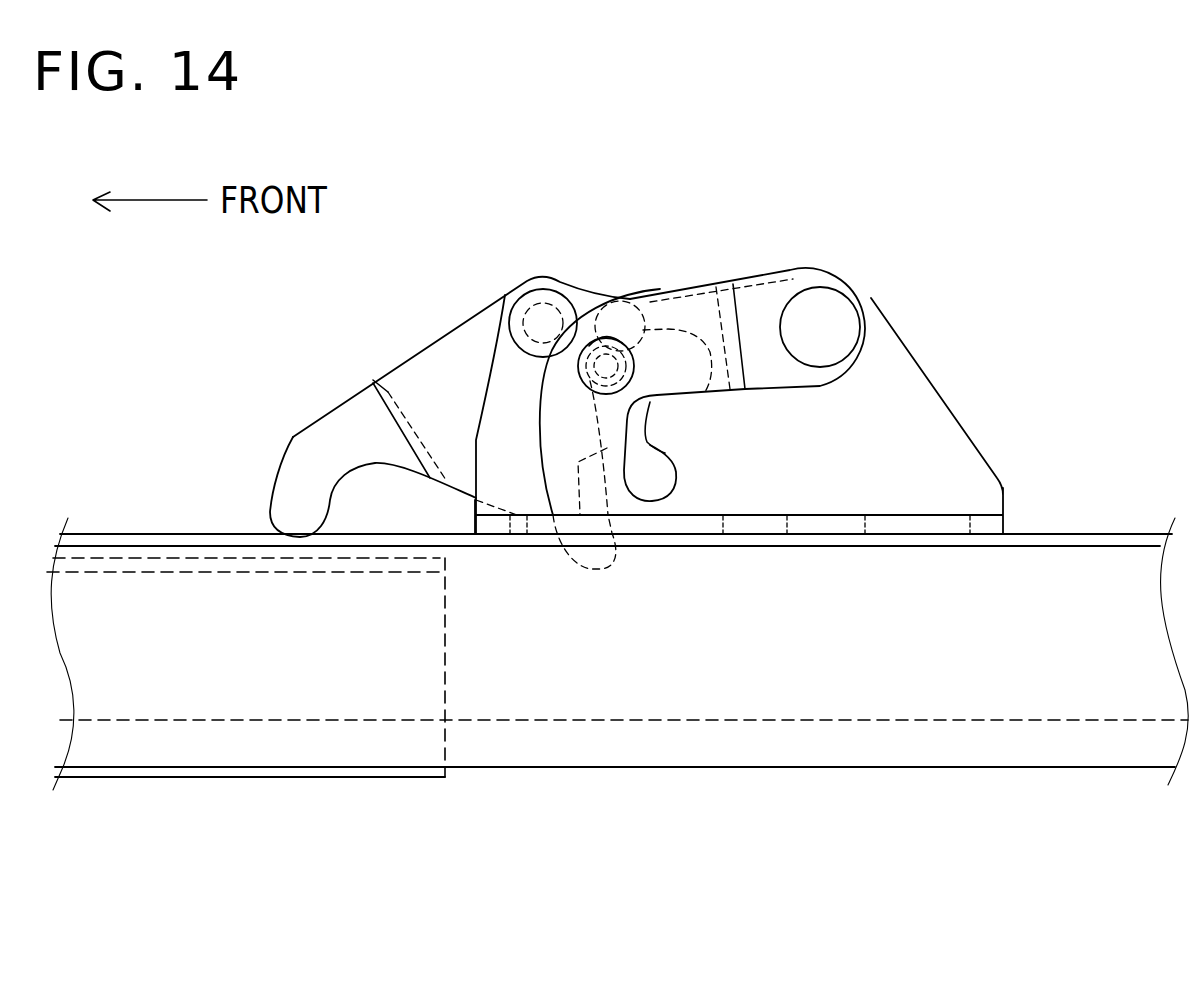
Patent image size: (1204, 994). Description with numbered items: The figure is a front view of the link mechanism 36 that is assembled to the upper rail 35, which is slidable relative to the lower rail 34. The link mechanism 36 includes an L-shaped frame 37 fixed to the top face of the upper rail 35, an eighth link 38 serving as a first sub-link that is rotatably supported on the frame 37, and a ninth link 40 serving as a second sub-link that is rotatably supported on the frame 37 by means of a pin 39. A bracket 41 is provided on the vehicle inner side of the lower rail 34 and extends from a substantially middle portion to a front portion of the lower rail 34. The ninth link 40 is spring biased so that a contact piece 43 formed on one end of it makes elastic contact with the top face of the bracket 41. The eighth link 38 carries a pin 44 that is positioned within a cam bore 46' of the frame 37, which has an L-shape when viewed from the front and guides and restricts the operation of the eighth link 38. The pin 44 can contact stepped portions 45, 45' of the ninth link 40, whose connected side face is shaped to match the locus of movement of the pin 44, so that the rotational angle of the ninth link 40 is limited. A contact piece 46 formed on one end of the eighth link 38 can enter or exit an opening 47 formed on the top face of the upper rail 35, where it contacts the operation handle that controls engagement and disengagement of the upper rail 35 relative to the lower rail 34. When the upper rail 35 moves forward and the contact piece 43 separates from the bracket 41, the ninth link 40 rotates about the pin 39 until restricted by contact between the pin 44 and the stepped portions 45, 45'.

The lower rail 34 is at (780, 750).
The upper rail 35 is at (1113, 533).
The link mechanism 36 is at (702, 394).
The L-shaped frame 37 is at (955, 413).
The eighth link 38 is at (692, 288).
The pin 39 is at (537, 296).
The ninth link 40 is at (419, 392).
The bracket 41 is at (177, 557).
The contact piece 43 is at (277, 530).
The pin 44 is at (587, 290).
The stepped portion 45 is at (643, 498).
The stepped portion 45' is at (615, 305).
The contact piece 46 is at (587, 551).
The cam bore 46' is at (700, 448).
The opening 47 is at (705, 548).